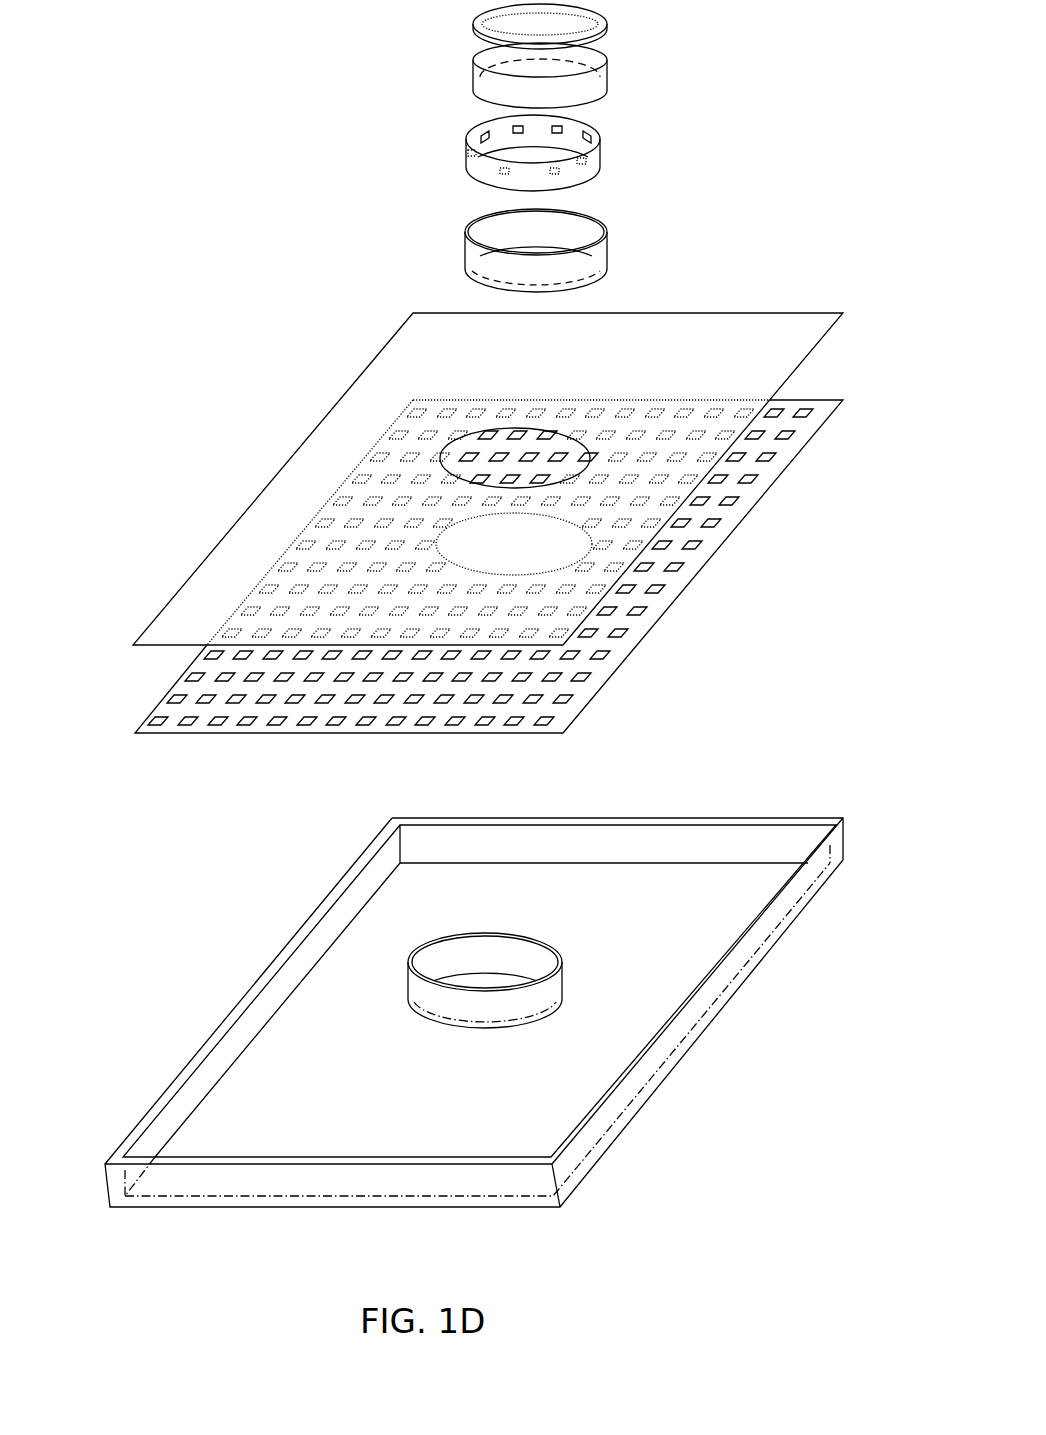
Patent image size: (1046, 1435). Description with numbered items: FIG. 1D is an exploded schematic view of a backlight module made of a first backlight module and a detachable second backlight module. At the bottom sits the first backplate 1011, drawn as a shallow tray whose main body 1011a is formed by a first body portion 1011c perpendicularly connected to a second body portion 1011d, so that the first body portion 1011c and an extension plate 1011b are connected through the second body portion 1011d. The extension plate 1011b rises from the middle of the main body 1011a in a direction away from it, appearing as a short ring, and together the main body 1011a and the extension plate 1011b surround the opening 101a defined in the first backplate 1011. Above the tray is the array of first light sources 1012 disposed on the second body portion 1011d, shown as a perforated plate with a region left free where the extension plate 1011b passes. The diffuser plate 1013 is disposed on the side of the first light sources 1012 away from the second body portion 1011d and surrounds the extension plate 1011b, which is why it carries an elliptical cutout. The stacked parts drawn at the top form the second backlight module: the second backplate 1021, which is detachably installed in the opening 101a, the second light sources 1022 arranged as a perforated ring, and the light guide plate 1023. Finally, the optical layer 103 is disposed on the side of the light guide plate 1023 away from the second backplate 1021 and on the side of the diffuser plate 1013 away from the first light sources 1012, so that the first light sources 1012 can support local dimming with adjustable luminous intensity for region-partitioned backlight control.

The optical layer 103 is at (500, 26).
The light guide plate 1023 is at (492, 77).
The second light sources 1022 is at (483, 132).
The second backplate 1021 is at (462, 256).
The diffuser plate 1013 is at (190, 612).
The first light sources 1012 is at (185, 700).
The first backplate 1011 is at (474, 1012).
The main body 1011a is at (474, 1012).
The extension plate 1011b is at (410, 987).
The first body portion 1011c is at (363, 865).
The second body portion 1011d is at (360, 935).
The opening 101a is at (490, 982).